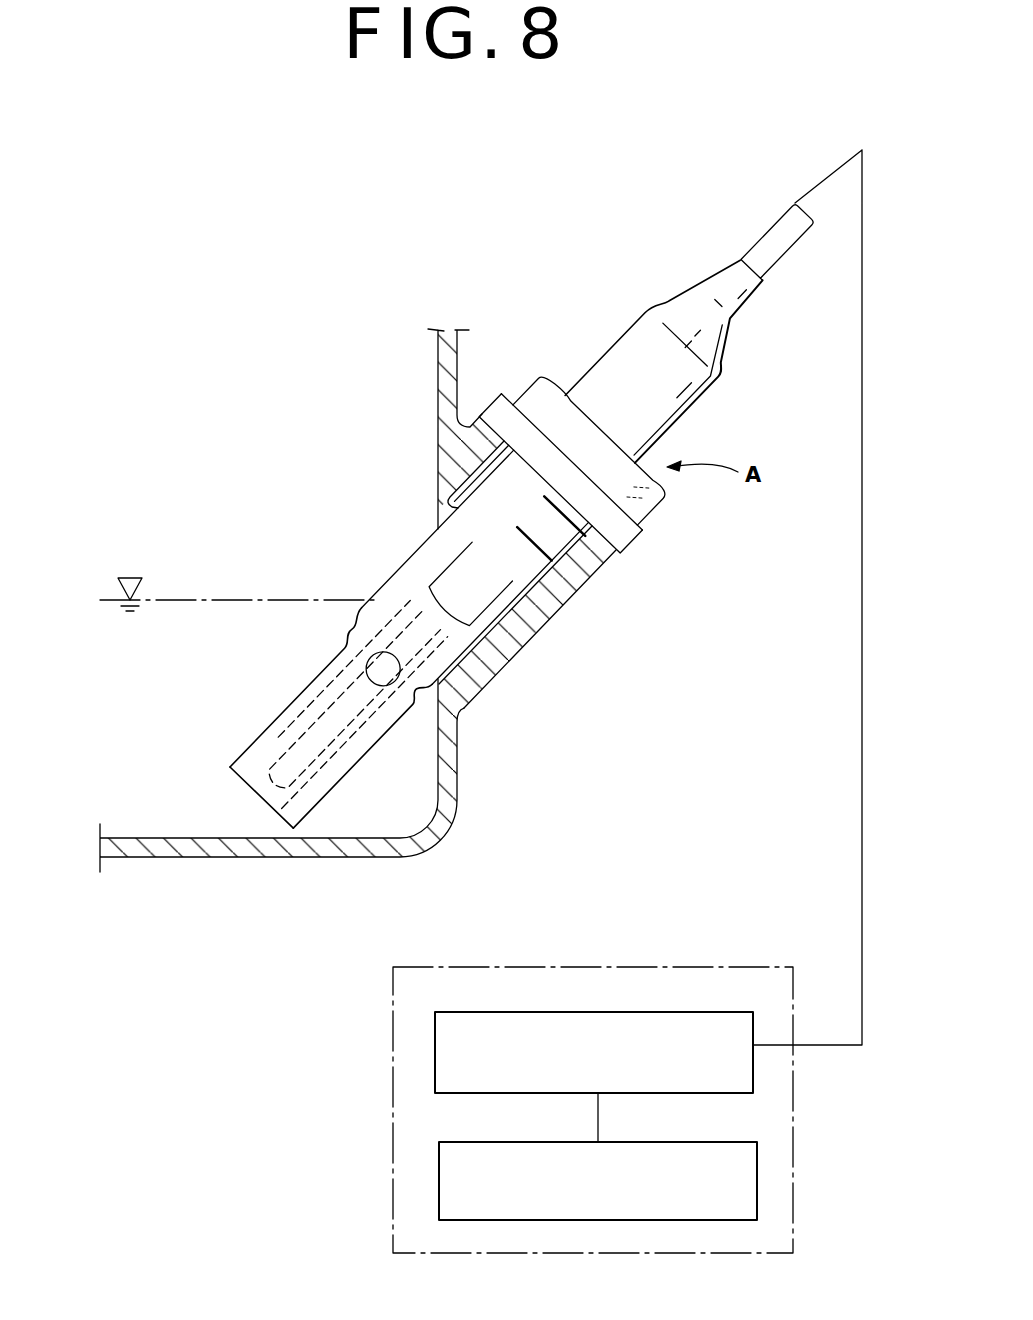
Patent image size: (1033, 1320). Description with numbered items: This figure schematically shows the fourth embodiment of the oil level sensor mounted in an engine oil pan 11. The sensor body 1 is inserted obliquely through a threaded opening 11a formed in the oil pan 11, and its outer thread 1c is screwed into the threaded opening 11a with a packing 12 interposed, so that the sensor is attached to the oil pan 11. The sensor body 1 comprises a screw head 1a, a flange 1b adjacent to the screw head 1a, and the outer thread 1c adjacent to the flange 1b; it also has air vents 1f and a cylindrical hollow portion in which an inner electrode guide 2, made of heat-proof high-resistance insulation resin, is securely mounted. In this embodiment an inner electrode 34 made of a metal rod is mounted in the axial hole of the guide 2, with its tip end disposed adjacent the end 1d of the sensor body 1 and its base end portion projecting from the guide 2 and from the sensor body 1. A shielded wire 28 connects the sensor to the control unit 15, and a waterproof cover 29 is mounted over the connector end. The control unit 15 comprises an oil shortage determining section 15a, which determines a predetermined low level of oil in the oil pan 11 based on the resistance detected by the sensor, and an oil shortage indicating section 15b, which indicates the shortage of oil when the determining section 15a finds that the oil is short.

The sensor body 1 is at (323, 663).
The screw head 1a is at (647, 497).
The flange 1b is at (643, 533).
The outer thread 1c is at (567, 557).
The end of the sensor body 1d is at (257, 798).
The air vents 1f is at (383, 686).
The inner electrode guide 2 is at (437, 567).
The oil pan 11 is at (448, 777).
The threaded opening 11a is at (530, 587).
The packing 12 is at (612, 538).
The control unit 15 is at (393, 1203).
The oil shortage determining section 15a is at (664, 1012).
The oil shortage indicating section 15b is at (645, 1220).
The shielded wire 28 is at (786, 246).
The waterproof cover 29 is at (678, 417).
The inner electrode 34 is at (310, 727).